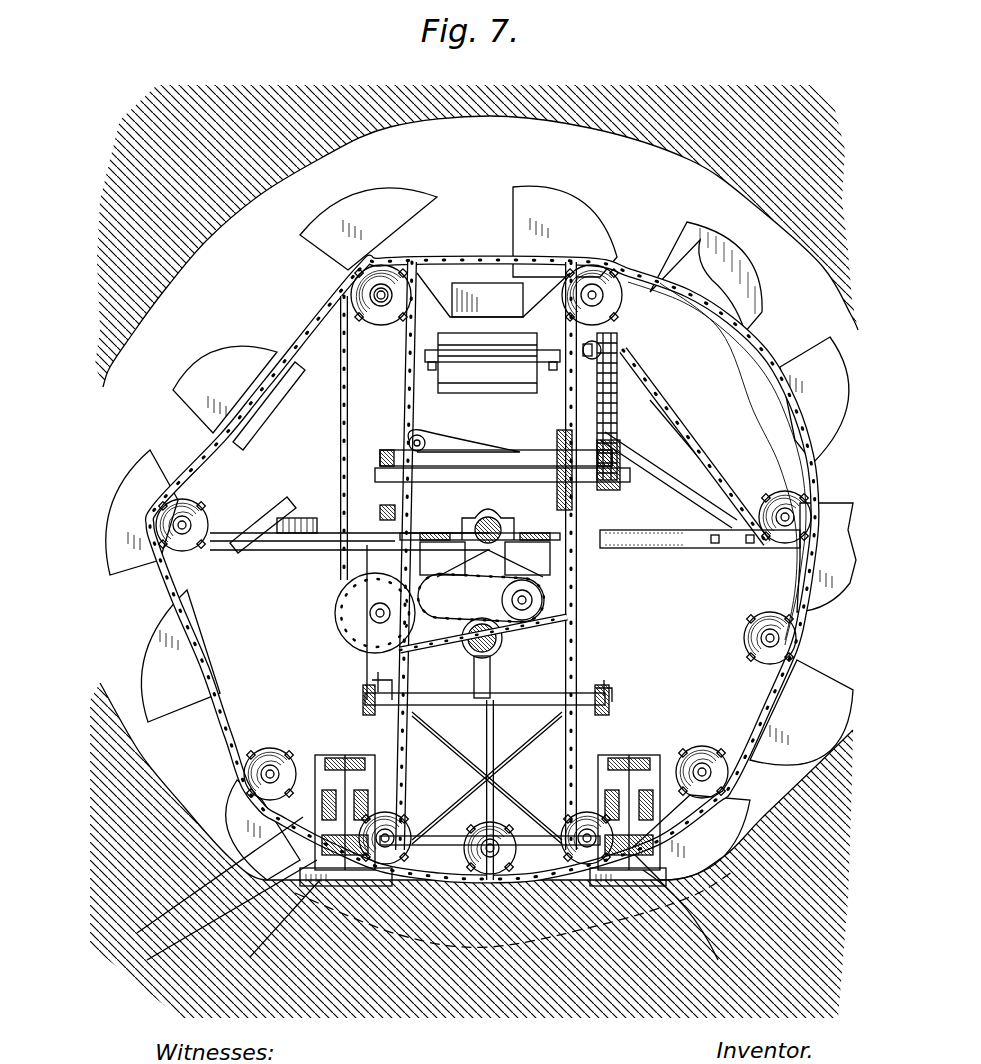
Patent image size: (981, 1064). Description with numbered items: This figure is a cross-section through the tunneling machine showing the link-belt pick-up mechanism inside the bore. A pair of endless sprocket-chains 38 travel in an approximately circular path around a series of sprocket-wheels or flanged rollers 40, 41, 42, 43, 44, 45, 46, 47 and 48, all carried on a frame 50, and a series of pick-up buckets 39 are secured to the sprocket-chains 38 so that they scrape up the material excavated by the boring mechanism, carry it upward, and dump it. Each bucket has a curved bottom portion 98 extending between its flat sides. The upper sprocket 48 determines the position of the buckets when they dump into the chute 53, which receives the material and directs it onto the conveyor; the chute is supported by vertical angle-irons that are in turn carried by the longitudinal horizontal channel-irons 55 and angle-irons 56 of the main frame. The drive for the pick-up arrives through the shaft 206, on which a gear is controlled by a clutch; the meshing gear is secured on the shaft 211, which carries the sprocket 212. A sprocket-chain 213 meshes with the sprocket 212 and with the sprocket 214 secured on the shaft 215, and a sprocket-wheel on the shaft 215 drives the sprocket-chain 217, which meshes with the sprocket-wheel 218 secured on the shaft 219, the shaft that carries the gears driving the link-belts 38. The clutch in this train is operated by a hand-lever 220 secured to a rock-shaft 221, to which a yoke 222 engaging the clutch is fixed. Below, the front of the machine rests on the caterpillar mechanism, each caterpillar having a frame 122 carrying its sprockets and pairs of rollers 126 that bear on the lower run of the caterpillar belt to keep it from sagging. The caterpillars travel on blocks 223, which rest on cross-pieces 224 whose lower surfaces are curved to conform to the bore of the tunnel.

The pick-up buckets 39 is at (610, 218).
The curved bottom portion 98 is at (712, 250).
The sprocket-chains 38 is at (222, 714).
The sprocket-wheel 47 is at (775, 500).
The sprocket-chain 217 is at (340, 402).
The chute 53 is at (493, 295).
The horizontal channel-irons 55 is at (604, 514).
The shaft 211 is at (540, 600).
The sprocket 212 is at (502, 600).
The shaft 206 is at (505, 640).
The yoke 222 is at (492, 670).
The hand-lever 220 is at (372, 575).
The shaft 215 is at (350, 605).
The sprocket 214 is at (370, 628).
The sprocket-chain 213 is at (448, 648).
The rock-shaft 221 is at (515, 703).
The angle-irons 56 is at (372, 684).
The frame 50 is at (289, 552).
The sprocket-wheel 218 is at (405, 282).
The shaft 219 is at (373, 295).
The upper sprocket 48 is at (612, 316).
The sprocket-wheel 40 is at (196, 515).
The sprocket-wheel 46 is at (752, 642).
The sprocket-wheel 45 is at (700, 755).
The sprocket-wheel 44 is at (580, 820).
The sprocket-wheel 43 is at (492, 835).
The sprocket-wheel 42 is at (398, 815).
The sprocket-wheel 41 is at (275, 752).
The caterpillar frame 122 is at (220, 876).
The rollers 126 is at (232, 921).
The blocks 223 is at (493, 927).
The cross-pieces 224 is at (443, 935).